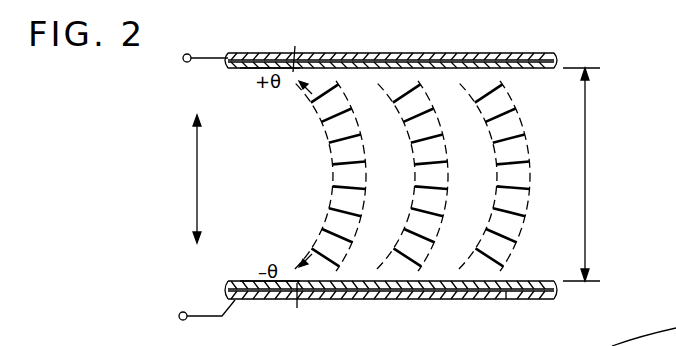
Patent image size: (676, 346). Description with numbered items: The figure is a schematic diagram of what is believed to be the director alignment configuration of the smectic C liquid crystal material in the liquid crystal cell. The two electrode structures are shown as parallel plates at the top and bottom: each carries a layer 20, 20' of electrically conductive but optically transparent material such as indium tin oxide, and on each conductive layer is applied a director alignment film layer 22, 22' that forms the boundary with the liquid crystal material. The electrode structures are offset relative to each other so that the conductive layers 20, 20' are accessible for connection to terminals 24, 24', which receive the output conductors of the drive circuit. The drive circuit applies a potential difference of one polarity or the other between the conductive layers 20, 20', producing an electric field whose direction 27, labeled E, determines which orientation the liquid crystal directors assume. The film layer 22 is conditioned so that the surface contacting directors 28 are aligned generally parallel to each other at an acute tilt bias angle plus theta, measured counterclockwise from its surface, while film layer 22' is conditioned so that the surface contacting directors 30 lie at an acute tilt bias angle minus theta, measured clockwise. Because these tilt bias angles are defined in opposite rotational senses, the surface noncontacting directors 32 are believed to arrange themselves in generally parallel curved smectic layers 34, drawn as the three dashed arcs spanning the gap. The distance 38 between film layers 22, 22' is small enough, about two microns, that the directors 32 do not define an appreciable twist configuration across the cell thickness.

The conductive layer 20 is at (391, 43).
The director alignment film layer 22 is at (249, 85).
The terminal 24 is at (180, 70).
The direction of the electric field 27 is at (198, 195).
The surface contacting directors 28 is at (484, 86).
The surface contacting directors 30 is at (486, 264).
The surface noncontacting directors 32 is at (524, 143).
The curved smectic layers 34 is at (554, 192).
The distance between film layers 38 is at (585, 156).
The conductive layer 20' is at (357, 292).
The director alignment film layer 22' is at (255, 263).
The terminal 24' is at (191, 321).